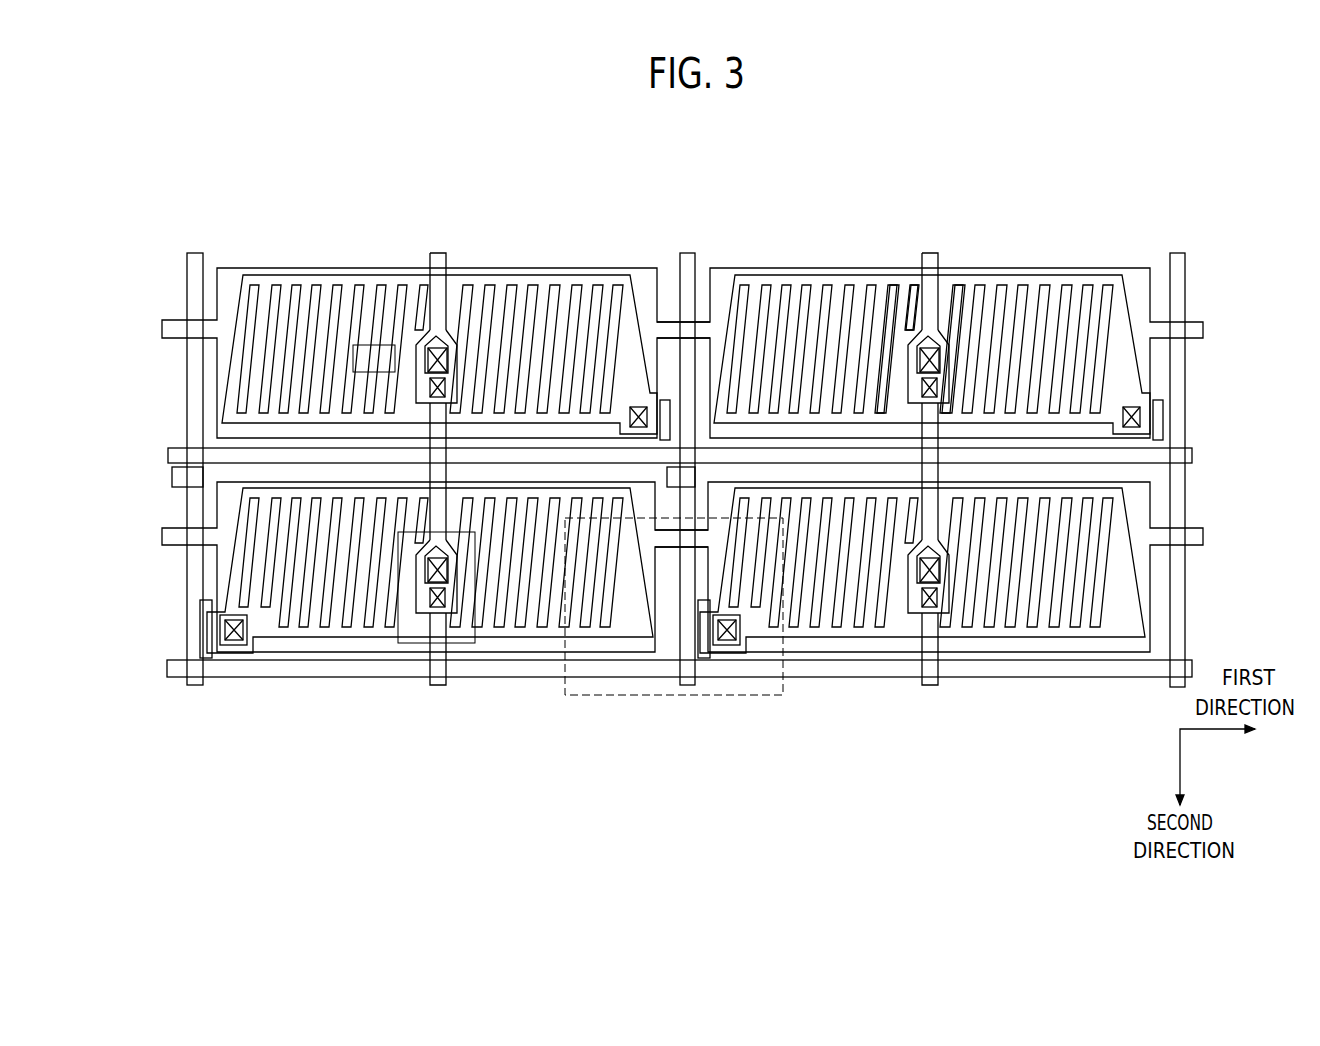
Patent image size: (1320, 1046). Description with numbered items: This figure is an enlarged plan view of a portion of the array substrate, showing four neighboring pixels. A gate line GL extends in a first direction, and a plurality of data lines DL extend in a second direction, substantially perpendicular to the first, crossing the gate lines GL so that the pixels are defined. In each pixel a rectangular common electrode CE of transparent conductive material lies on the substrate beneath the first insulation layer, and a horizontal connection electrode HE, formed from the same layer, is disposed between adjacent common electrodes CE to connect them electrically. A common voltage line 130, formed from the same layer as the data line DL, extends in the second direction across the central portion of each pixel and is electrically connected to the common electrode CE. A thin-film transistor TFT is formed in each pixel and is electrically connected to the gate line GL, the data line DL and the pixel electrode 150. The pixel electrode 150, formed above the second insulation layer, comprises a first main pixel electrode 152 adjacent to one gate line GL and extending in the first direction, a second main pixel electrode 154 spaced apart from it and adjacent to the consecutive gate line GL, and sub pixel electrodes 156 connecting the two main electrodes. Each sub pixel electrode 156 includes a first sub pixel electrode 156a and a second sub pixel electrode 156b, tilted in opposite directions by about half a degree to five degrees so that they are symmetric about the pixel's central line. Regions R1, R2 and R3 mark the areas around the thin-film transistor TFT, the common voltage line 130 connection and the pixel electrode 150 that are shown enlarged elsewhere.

The common electrode CE is at (228, 277).
The horizontal connection electrode HE is at (666, 330).
The data line DL is at (185, 601).
The gate line GL is at (287, 672).
The common voltage line 130 is at (440, 262).
The pixel electrode 150 is at (519, 280).
The first main pixel electrode 152 is at (806, 280).
The second main pixel electrode 154 is at (862, 355).
The sub pixel electrode 156 is at (941, 287).
The first sub pixel electrode 156a is at (890, 320).
The second sub pixel electrode 156b is at (971, 320).
The thin-film transistor TFT is at (204, 664).
The region R1 is at (631, 696).
The region R2 is at (412, 645).
The region R3 is at (374, 345).